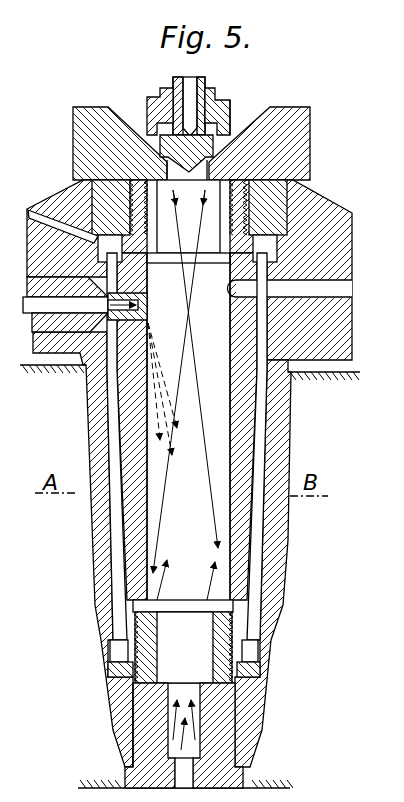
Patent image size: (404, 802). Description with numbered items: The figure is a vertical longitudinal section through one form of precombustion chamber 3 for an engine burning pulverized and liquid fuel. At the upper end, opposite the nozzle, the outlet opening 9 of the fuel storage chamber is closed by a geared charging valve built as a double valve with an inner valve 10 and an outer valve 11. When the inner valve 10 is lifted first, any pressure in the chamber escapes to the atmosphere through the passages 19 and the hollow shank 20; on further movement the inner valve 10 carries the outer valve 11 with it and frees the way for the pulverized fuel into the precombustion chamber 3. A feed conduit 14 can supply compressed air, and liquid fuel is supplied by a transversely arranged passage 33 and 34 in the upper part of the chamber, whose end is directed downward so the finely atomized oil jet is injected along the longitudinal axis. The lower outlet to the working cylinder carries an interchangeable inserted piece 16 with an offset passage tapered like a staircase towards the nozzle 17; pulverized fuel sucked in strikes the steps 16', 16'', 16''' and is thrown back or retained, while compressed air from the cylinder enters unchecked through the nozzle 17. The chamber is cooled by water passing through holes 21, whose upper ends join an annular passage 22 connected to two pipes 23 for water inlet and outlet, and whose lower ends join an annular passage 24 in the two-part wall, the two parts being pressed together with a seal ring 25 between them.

The precombustion chamber 3 is at (150, 425).
The outlet opening 9 is at (205, 208).
The inner valve 10 is at (150, 120).
The outer valve 11 is at (230, 103).
The feed conduit 14 is at (333, 288).
The inserted piece 16 is at (139, 735).
The step 16' is at (134, 633).
The step 16'' is at (84, 668).
The step 16''' is at (84, 725).
The nozzle 17 is at (182, 778).
The passages 19 is at (158, 98).
The hollow shank 20 is at (205, 83).
The holes 21 is at (117, 538).
The annular passage 22 is at (75, 200).
The pipes 23 is at (50, 222).
The annular passage 24 is at (122, 652).
The seal ring 25 is at (260, 668).
The passage 33 is at (83, 371).
The passage 34 is at (83, 390).